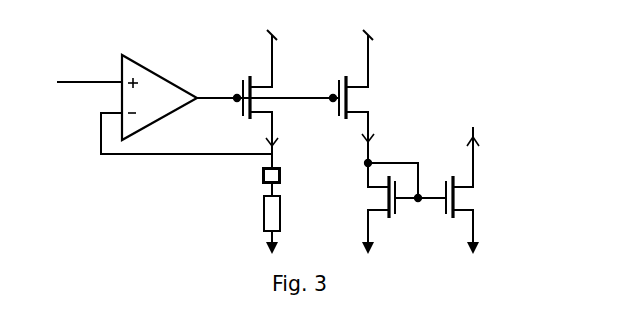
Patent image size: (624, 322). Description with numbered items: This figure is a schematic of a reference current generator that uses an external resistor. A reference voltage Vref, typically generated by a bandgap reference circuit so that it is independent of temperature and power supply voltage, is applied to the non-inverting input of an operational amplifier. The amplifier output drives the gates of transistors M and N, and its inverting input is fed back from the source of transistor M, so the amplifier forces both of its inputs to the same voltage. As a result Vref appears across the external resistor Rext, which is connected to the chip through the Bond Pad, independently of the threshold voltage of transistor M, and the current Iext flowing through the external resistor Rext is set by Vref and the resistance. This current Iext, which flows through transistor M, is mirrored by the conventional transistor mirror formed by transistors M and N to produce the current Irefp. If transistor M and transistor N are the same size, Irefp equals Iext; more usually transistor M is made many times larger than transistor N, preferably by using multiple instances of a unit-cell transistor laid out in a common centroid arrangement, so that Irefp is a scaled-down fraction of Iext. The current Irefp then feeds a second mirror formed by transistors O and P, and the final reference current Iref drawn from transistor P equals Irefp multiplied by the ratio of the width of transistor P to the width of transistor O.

The reference voltage Vref is at (198, 104).
The transistor M is at (252, 98).
The transistor N is at (356, 96).
The transistor O is at (371, 215).
The transistor P is at (470, 190).
The external current Iext is at (288, 142).
The mirrored reference current Irefp is at (389, 140).
The reference current Iref is at (489, 143).
The bond pad Bond Pad is at (221, 180).
The external resistor Rext is at (292, 218).